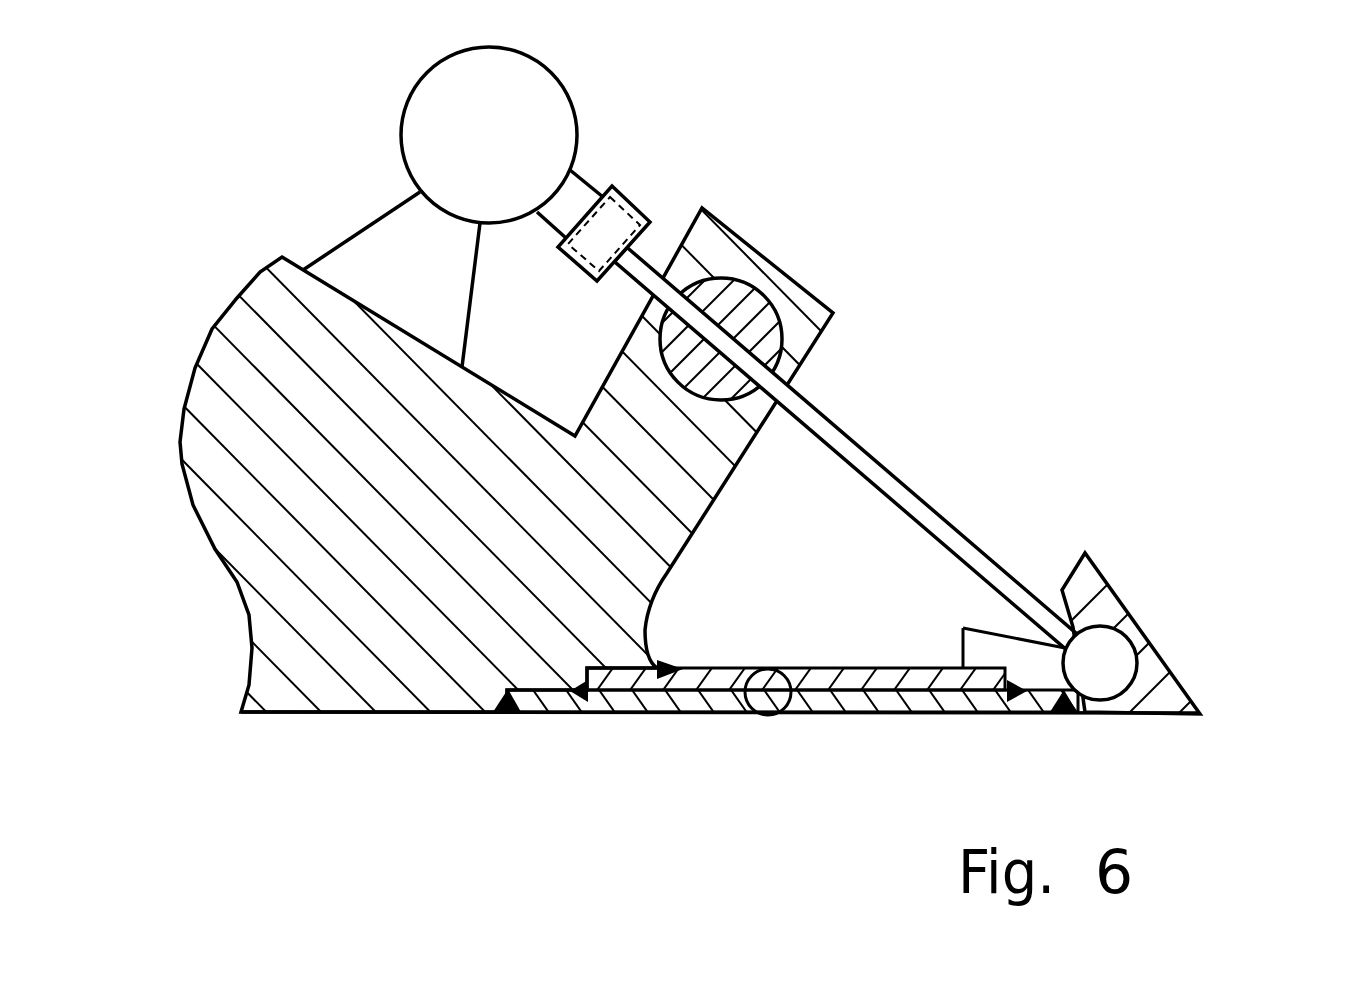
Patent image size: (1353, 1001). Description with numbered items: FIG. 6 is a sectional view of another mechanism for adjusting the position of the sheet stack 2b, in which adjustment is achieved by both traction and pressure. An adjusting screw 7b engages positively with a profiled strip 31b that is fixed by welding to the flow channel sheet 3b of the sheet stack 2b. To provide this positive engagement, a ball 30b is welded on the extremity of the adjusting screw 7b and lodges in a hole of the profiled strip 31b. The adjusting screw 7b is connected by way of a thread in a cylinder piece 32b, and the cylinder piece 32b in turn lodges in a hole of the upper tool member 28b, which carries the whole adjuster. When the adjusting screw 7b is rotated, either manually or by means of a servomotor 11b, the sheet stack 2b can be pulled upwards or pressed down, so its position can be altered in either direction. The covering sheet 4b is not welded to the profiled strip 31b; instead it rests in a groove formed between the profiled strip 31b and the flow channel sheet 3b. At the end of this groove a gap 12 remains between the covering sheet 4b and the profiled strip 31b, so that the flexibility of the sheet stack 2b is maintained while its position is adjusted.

The upper tool member 28b is at (255, 335).
The servomotor 11b is at (535, 137).
The adjusting screws 7b is at (617, 203).
The cylinder piece 32b is at (742, 302).
The sheet stack 2b is at (773, 668).
The flow channel sheet 3b is at (858, 667).
The covering sheet 4b is at (913, 683).
The gap 12 is at (1007, 673).
The balls 30b is at (1093, 658).
The profiled strip 31b is at (1167, 700).